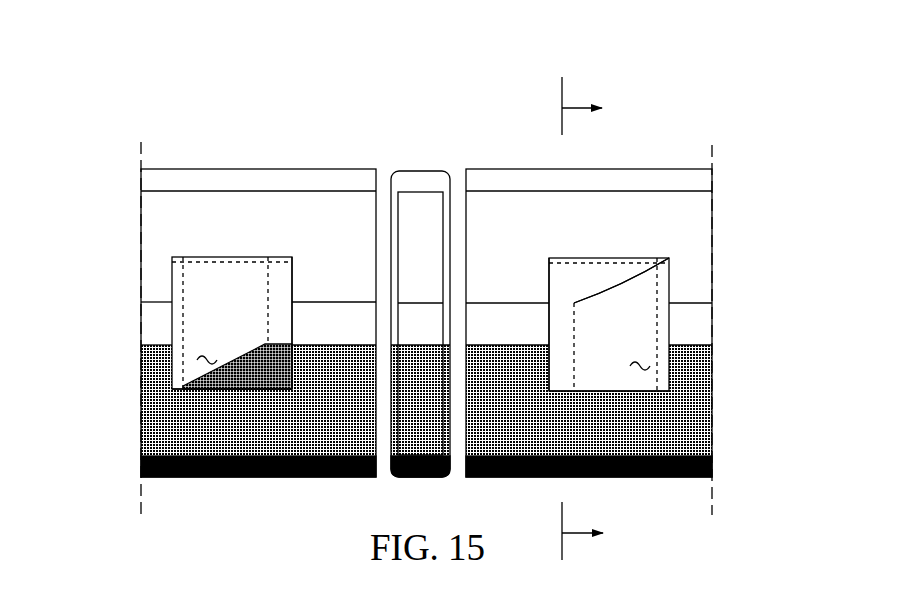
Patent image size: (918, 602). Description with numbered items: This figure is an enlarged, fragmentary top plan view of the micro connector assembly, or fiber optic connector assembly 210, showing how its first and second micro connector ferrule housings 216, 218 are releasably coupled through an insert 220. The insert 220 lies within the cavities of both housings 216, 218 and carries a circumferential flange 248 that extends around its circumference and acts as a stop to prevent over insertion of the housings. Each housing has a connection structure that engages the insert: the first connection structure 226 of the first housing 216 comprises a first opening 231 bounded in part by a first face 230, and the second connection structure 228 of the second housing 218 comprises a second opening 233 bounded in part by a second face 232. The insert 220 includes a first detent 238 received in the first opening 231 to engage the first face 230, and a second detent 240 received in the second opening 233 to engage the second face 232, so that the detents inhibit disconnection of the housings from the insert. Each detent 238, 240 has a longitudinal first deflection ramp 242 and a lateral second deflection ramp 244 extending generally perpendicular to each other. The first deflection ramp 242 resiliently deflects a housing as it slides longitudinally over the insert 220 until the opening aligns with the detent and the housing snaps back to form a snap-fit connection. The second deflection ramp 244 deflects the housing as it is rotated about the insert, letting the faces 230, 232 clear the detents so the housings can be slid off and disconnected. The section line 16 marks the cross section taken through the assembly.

The fiber optic connector assembly 210 is at (335, 78).
The first micro connector ferrule housing 216 is at (222, 135).
The second micro connector ferrule housing 218 is at (650, 140).
The insert 220 is at (417, 162).
The circumferential flange 248 is at (417, 219).
The first connection structure 226 is at (167, 277).
The second connection structure 228 is at (673, 287).
The first detent 238 is at (193, 277).
The first face 230 is at (292, 275).
The second face 232 is at (549, 278).
The first deflection ramp 242 is at (212, 315).
The second deflection ramp 244 is at (268, 365).
The second detent 240 is at (637, 288).
The first opening 231 is at (198, 375).
The second opening 233 is at (637, 365).
The section line 16- 16 is at (577, 323).